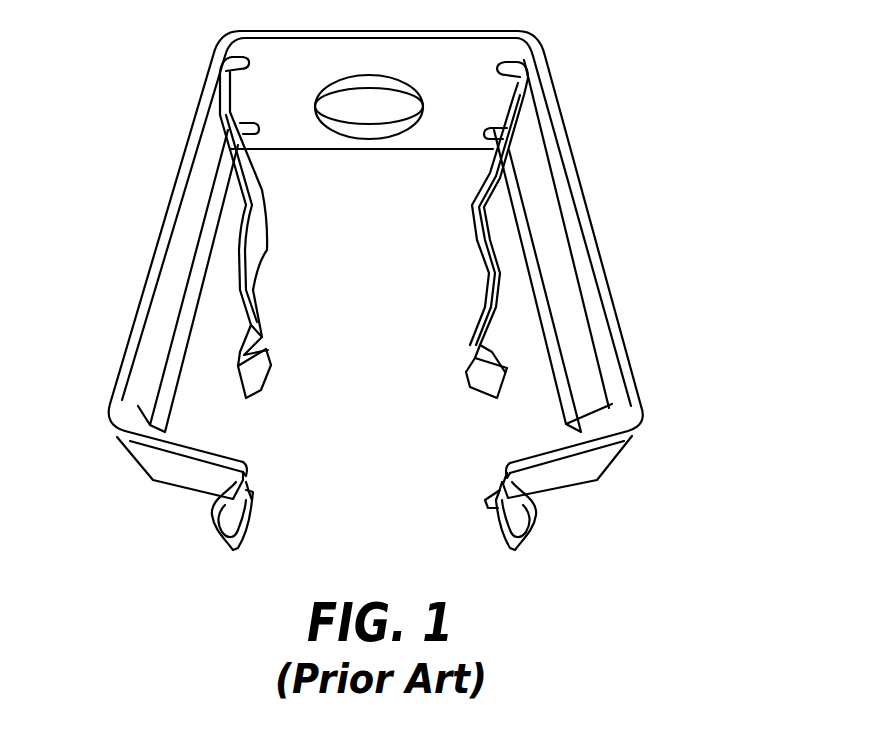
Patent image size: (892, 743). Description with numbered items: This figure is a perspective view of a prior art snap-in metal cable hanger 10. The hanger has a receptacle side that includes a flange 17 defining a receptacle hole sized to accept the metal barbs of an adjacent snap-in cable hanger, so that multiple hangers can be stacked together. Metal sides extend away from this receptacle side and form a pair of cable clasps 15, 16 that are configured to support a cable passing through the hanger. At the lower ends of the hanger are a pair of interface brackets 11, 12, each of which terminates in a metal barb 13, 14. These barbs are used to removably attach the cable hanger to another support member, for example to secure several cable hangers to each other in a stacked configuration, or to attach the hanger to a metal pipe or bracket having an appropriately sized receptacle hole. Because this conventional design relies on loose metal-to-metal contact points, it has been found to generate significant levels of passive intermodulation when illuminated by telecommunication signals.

The snap-in metal cable hanger 10 is at (433, 292).
The interface bracket 11 is at (185, 526).
The interface bracket 12 is at (572, 523).
The metal barb 13 is at (232, 520).
The metal barb 14 is at (472, 514).
The cable clasp 15 is at (250, 268).
The cable clasp 16 is at (490, 268).
The flange 17 is at (367, 128).